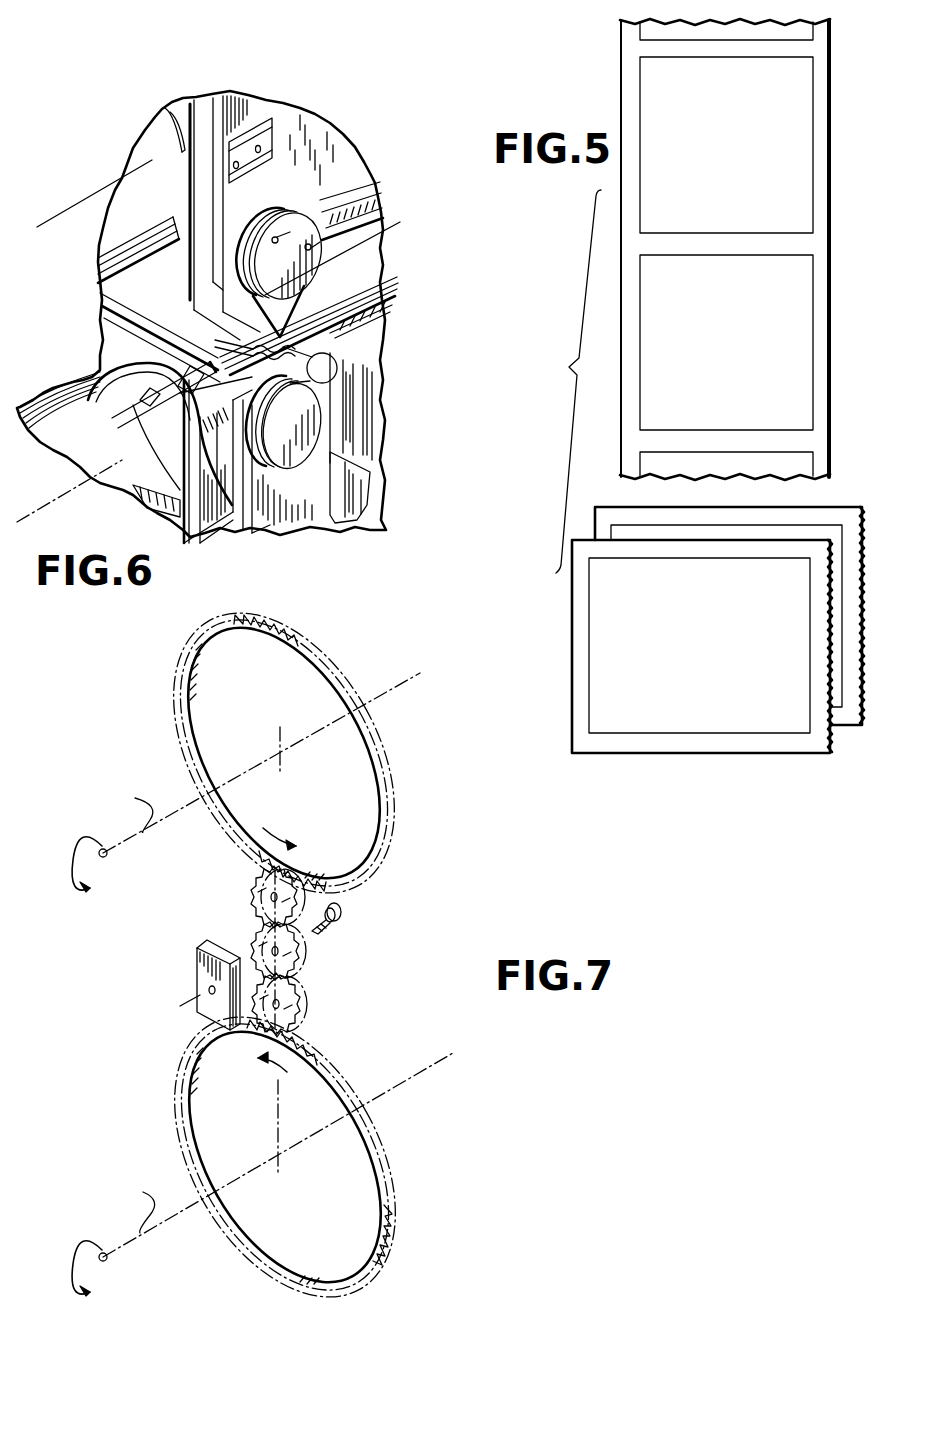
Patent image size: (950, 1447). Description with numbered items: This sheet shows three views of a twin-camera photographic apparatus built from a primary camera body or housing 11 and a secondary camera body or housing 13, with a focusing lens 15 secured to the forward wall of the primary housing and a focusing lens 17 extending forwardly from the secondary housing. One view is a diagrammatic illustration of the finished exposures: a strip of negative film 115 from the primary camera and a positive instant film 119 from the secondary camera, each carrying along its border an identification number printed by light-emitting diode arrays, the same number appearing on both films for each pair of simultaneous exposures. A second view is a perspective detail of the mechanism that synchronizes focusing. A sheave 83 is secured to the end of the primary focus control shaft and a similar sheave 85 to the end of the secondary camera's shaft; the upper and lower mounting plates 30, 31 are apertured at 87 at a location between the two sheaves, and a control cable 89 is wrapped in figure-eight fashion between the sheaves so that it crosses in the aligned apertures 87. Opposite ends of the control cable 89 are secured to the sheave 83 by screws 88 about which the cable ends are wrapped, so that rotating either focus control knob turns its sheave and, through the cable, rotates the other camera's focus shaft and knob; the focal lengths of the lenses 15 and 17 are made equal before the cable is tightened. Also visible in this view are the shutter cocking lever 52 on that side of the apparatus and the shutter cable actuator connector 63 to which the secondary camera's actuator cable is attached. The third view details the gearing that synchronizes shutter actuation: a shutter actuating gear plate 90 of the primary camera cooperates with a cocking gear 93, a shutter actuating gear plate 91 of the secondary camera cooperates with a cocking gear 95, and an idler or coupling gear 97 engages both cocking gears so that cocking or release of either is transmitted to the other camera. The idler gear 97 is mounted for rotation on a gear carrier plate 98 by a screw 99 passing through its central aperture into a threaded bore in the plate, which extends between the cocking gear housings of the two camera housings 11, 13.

In FIG. 6, the primary camera body or housing 11 is at (312, 143).
In FIG. 6, the secondary camera body or housing 13 is at (307, 512).
In FIG. 6, the focusing lens 15 is at (148, 159).
In FIG. 6, the focusing lens 17 is at (135, 470).
In FIG. 6, the upper mounting plate 30 is at (365, 257).
In FIG. 6, the lower mounting plate 31 is at (396, 285).
In FIG. 6, the shutter cocking lever 52 is at (350, 493).
In FIG. 6, the shutter cable actuator connector 63 is at (147, 407).
In FIG. 6, the sheave 83 is at (372, 185).
In FIG. 6, the sheave 85 is at (275, 460).
In FIG. 6, the apertures 87 is at (285, 335).
In FIG. 6, the screws 88 is at (295, 218).
In FIG. 6, the control cable 89 is at (302, 307).
In FIG. 7, the shutter actuating gear plate 90 is at (298, 635).
In FIG. 7, the shutter actuating gear plate 91 is at (393, 1245).
In FIG. 7, the cocking gear 93 is at (255, 882).
In FIG. 7, the cocking gear 95 is at (305, 1010).
In FIG. 7, the idler or coupling gear 97 is at (305, 968).
In FIG. 7, the gear carrier plate 98 is at (205, 974).
In FIG. 7, the screw 99 is at (342, 918).
In FIG. 5, the negative film 115 is at (790, 203).
In FIG. 5, the positive instant film 119 is at (722, 720).